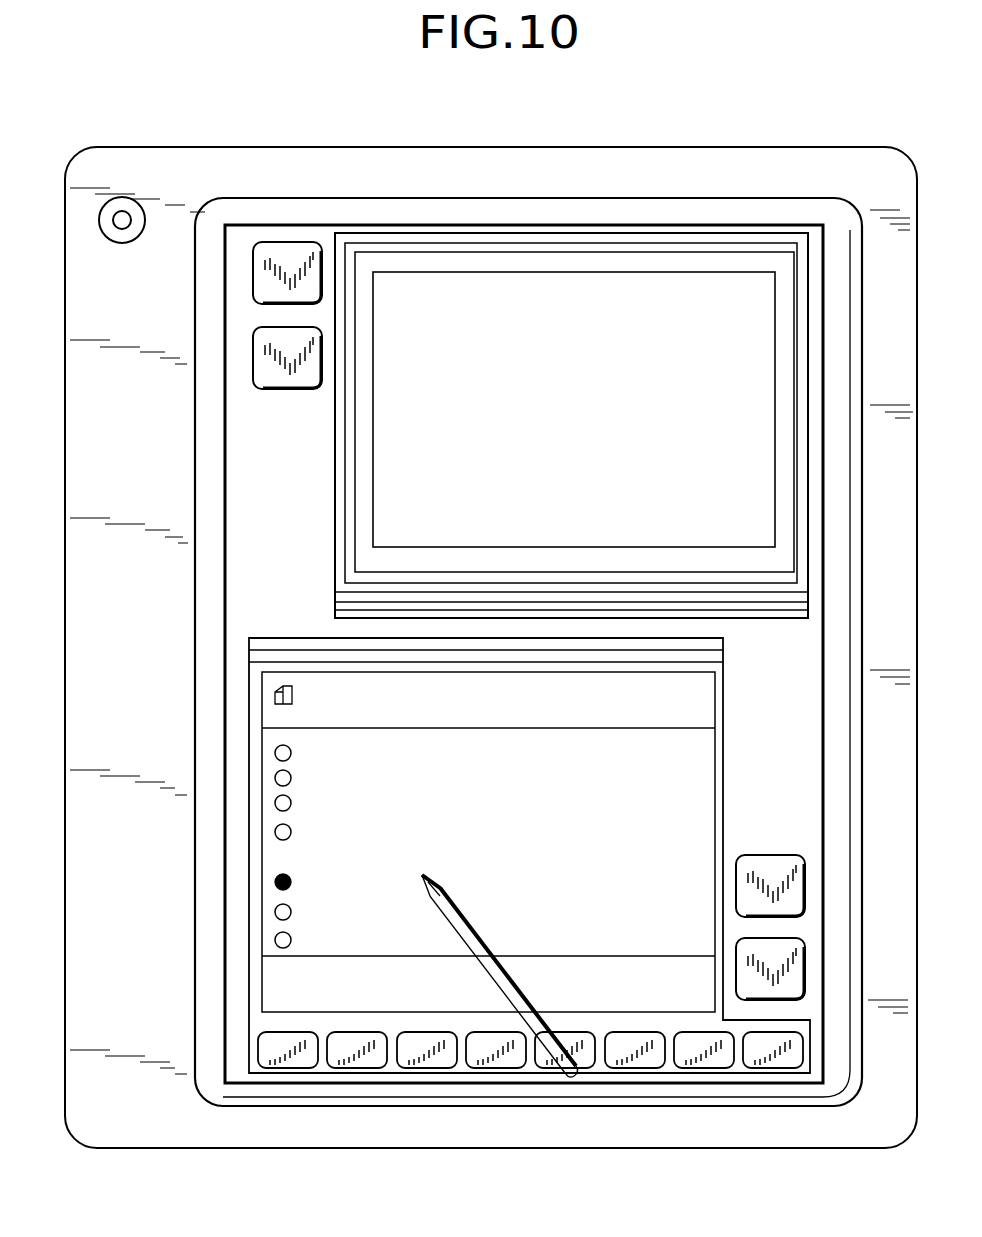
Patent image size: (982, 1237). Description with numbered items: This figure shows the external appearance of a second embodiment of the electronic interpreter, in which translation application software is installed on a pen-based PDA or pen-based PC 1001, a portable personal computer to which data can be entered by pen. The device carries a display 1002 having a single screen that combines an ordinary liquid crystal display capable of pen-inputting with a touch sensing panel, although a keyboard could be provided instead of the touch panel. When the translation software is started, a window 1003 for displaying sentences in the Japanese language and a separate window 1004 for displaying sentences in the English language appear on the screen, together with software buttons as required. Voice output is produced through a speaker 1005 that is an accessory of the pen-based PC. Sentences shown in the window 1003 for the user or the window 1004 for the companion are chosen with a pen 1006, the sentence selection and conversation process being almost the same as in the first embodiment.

The pen-based PC 1001 is at (237, 162).
The display 1002 is at (241, 465).
The window for displaying sentences in the Japanese language 1003 is at (693, 858).
The window for displaying sentences in the English language 1004 is at (740, 515).
The speaker 1005 is at (121, 243).
The pen 1006 is at (575, 1076).